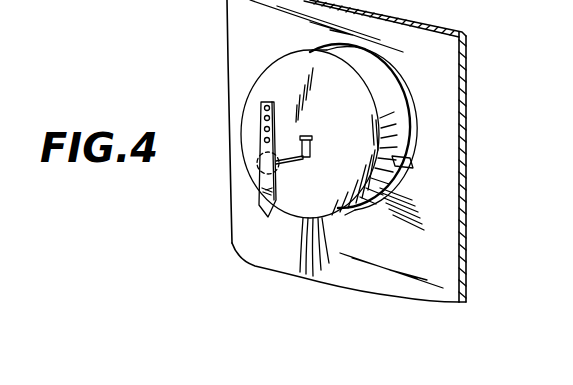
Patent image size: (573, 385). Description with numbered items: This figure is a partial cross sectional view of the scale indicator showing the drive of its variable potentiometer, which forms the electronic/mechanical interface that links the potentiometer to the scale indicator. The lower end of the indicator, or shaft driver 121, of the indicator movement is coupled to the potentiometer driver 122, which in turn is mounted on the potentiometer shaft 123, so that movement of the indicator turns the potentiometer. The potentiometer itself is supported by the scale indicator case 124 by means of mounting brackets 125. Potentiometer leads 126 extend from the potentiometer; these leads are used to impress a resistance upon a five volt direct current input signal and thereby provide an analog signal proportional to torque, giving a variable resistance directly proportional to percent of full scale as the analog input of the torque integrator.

The shaft driver 121 is at (276, 182).
The potentiometer driver 122 is at (306, 158).
The potentiometer shaft 123 is at (312, 141).
The scale indicator case 124 is at (463, 140).
The mounting brackets 125 is at (405, 156).
The potentiometer leads 126 is at (331, 264).